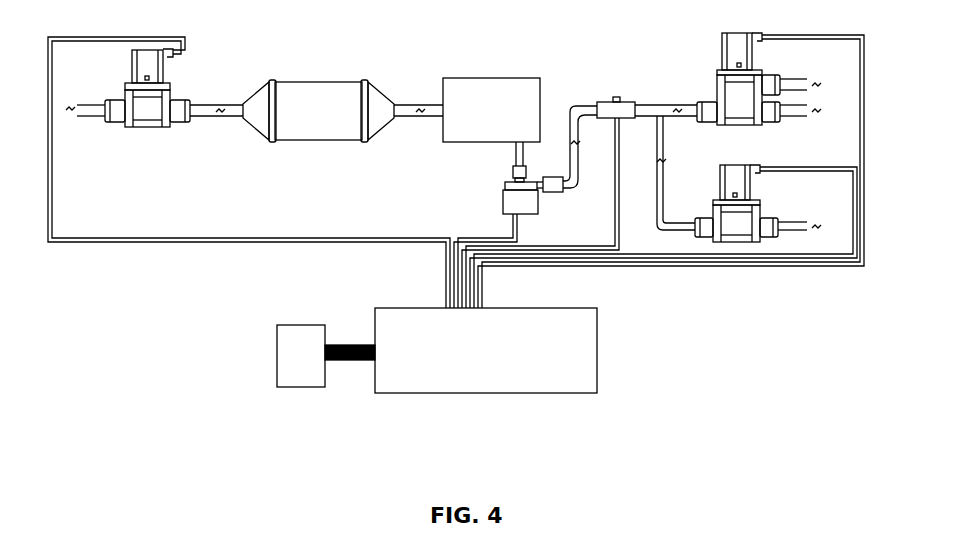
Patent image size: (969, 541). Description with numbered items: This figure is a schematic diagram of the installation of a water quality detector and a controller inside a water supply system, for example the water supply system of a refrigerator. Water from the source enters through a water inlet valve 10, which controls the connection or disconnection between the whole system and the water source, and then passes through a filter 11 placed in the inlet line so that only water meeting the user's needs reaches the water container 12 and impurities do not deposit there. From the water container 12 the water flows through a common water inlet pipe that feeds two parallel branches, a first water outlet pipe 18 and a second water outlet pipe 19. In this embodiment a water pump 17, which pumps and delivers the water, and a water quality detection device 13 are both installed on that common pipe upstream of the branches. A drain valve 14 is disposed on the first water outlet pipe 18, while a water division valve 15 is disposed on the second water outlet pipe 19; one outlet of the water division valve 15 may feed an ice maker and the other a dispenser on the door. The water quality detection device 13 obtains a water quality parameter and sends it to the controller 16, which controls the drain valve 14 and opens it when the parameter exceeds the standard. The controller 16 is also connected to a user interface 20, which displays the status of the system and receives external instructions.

The water inlet valve 10 is at (148, 112).
The filter 11 is at (312, 128).
The water container 12 is at (452, 132).
The water quality detection device 13 is at (603, 102).
The drain valve 14 is at (755, 217).
The water division valve 15 is at (742, 110).
The controller 16 is at (510, 378).
The water pump 17 is at (532, 196).
The first water outlet pipe 18 is at (662, 197).
The second water outlet pipe 19 is at (670, 105).
The user interface 20 is at (295, 378).